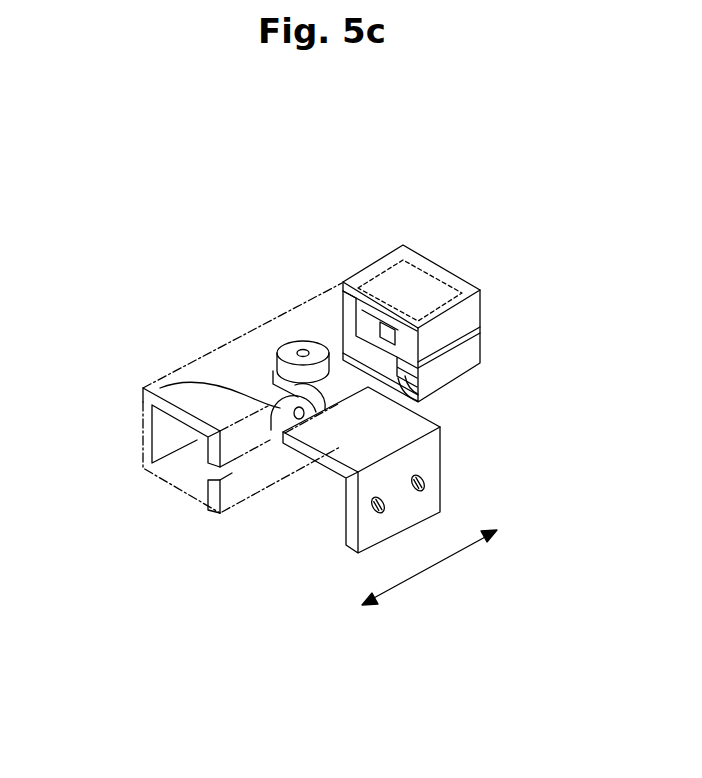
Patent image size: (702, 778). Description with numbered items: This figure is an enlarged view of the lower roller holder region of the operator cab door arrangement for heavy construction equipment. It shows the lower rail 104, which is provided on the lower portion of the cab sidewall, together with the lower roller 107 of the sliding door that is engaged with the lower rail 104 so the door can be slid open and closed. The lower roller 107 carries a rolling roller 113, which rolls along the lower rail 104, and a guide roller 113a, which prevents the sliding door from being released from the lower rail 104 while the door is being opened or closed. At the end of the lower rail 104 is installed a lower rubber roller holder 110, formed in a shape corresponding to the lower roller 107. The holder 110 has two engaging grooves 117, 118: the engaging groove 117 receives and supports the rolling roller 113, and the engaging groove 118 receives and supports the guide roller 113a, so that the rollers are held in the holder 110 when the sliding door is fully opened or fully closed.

The lower rail 104 is at (212, 508).
The lower roller 107 is at (327, 503).
The lower rubber roller holder 110 is at (474, 256).
The rolling roller 113 is at (153, 401).
The guide roller 113a is at (276, 353).
The engaging groove 117 is at (428, 399).
The engaging groove 118 is at (341, 332).